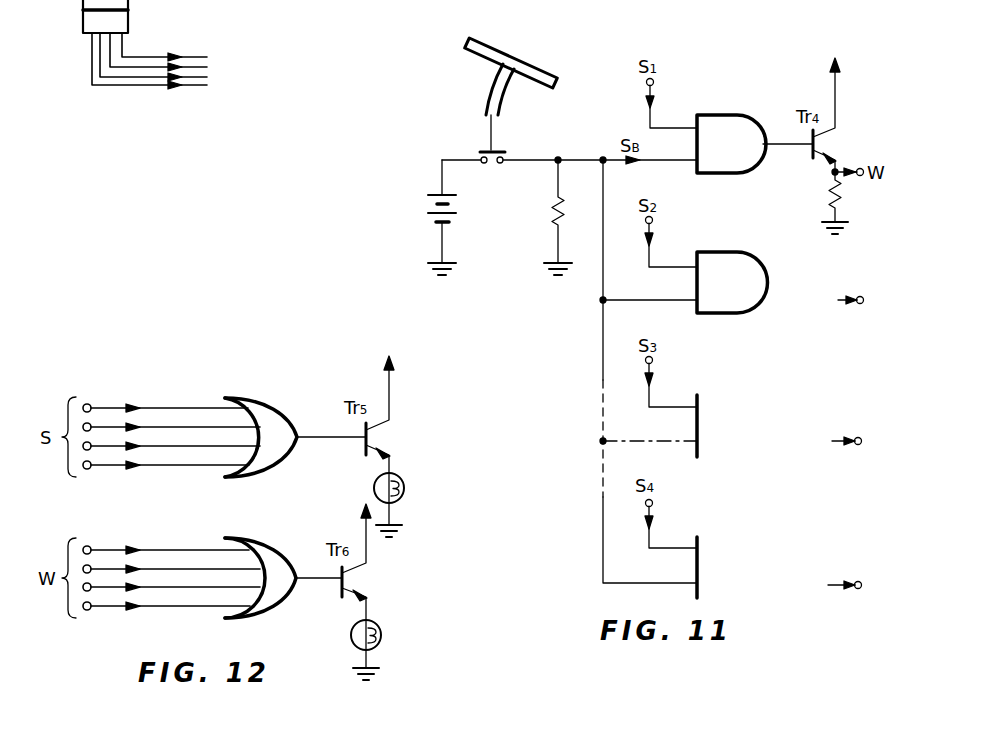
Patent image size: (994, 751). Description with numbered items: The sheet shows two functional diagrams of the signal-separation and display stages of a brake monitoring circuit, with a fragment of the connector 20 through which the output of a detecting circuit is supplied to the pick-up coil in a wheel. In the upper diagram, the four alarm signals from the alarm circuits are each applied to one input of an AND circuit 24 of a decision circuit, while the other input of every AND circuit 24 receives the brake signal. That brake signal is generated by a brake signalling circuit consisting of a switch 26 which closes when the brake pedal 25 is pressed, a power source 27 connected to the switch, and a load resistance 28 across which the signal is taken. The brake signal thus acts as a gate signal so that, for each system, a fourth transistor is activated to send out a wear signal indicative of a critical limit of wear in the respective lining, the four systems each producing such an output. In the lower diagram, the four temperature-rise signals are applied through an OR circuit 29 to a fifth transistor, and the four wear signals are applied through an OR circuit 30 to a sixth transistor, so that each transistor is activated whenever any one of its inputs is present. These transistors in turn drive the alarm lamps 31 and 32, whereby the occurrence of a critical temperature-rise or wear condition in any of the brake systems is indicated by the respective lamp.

In FIG. 11, the connector 20 is at (132, 0).
In FIG. 11, the AND circuit 24 is at (731, 155).
In FIG. 11, the brake pedal 25 is at (532, 58).
In FIG. 11, the switch 26 is at (492, 167).
In FIG. 11, the power source 27 is at (427, 206).
In FIG. 11, the load resistance 28 is at (551, 214).
In FIG. 12, the OR circuit 29 is at (290, 448).
In FIG. 12, the OR circuit 30 is at (289, 589).
In FIG. 12, the alarm lamp 31 is at (403, 476).
In FIG. 12, the alarm lamp 32 is at (382, 626).